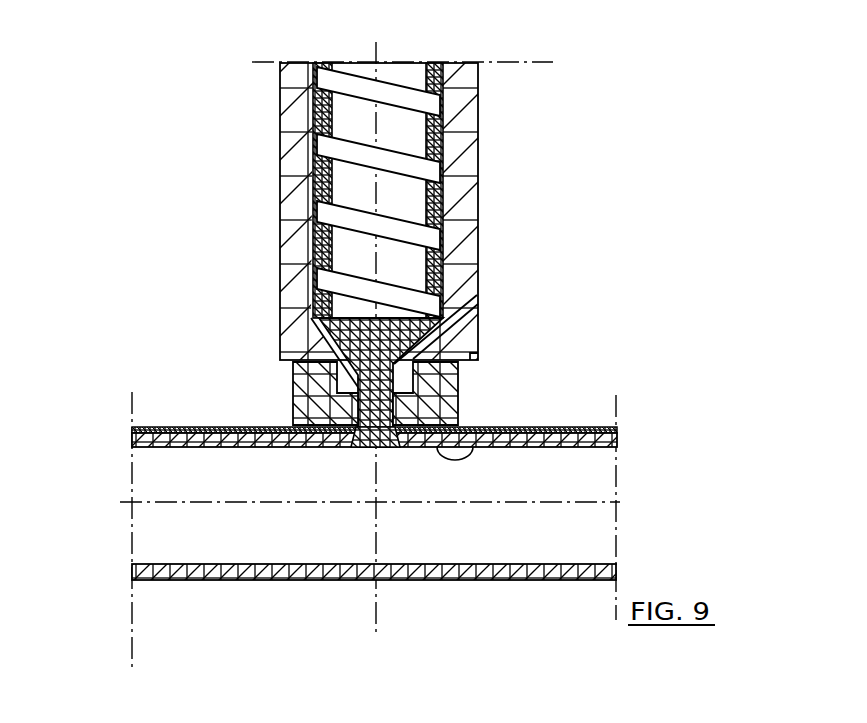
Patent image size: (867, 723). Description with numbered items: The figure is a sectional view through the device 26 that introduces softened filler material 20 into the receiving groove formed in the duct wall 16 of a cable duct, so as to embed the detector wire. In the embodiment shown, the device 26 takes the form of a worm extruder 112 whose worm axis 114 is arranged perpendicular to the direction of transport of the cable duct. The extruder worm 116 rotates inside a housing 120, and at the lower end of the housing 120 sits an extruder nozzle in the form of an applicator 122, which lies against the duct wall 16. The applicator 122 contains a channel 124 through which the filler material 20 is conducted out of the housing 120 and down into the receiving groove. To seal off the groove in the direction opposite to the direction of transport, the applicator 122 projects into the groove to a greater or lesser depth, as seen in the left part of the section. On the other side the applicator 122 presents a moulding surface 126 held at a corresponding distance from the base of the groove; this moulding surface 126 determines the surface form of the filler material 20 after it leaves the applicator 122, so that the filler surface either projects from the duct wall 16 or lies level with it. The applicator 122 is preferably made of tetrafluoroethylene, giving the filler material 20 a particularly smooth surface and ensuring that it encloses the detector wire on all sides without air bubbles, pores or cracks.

The duct wall 16 is at (478, 570).
The filler material 20 is at (318, 329).
The device 26 is at (316, 240).
The worm extruder 112 is at (480, 117).
The worm axis 114 is at (377, 124).
The extruder worm 116 is at (390, 96).
The housing 120 is at (462, 204).
The applicator 122 is at (462, 378).
The channel 124 is at (368, 441).
The moulding surface 126 is at (481, 428).